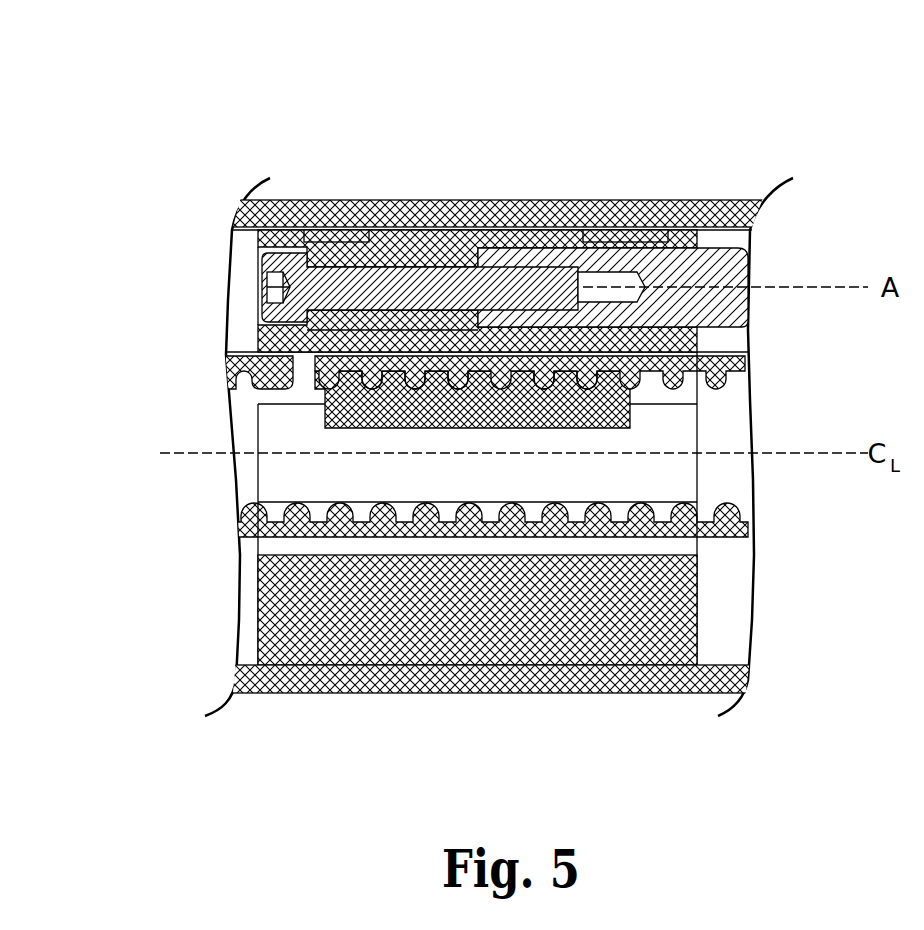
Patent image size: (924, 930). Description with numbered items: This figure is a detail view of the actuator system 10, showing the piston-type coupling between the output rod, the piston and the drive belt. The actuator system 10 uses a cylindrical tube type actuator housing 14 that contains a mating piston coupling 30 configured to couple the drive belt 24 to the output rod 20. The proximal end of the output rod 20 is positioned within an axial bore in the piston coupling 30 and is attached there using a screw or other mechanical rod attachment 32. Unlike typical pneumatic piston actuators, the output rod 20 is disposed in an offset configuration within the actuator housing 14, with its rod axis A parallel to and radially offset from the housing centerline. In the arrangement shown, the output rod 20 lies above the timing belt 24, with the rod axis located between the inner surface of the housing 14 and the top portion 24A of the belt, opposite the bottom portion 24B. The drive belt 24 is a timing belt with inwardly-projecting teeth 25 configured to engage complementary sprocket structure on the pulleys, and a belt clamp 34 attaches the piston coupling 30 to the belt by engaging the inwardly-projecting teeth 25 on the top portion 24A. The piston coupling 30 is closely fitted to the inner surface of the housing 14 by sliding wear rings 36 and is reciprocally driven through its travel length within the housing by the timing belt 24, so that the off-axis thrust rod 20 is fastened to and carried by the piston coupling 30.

The actuator system 10 is at (222, 80).
The actuator housing 14 is at (572, 215).
The output rod 20 is at (724, 262).
The drive belt 24 is at (398, 449).
The top portion of timing belt 24A is at (228, 367).
The bottom portion of timing belt 24B is at (434, 520).
The inwardly-projecting teeth 25 is at (565, 385).
The piston coupling 30 is at (550, 650).
The mechanical rod attachment 32 is at (465, 258).
The belt clamp 34 is at (378, 385).
The sliding wear rings 36 is at (333, 232).